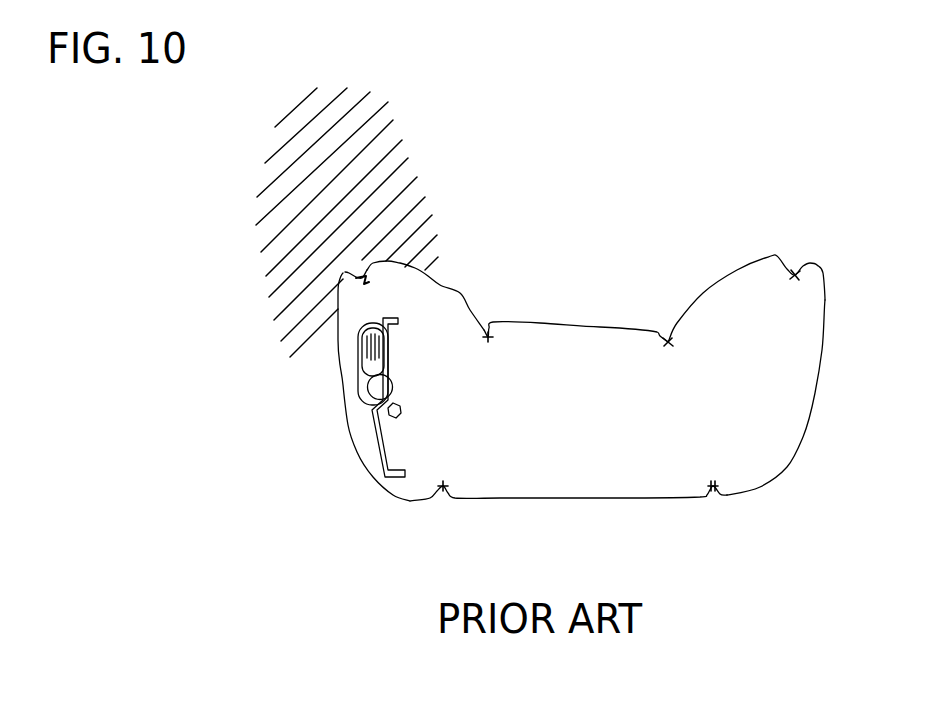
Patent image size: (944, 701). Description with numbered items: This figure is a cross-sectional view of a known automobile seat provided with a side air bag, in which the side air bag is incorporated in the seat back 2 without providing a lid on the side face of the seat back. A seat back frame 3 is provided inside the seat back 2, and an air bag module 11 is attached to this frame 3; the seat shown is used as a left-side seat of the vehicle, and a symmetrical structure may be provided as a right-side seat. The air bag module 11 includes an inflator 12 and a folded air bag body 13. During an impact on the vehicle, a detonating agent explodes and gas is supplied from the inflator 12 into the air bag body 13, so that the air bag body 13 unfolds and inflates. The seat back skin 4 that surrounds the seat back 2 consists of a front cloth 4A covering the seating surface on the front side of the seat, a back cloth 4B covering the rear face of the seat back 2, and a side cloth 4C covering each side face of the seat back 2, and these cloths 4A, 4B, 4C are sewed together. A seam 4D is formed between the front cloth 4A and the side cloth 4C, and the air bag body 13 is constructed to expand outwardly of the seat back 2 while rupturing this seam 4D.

The seat back 2 is at (623, 313).
The seat back frame 3 is at (373, 423).
The seat back skin 4 is at (553, 322).
The front cloth 4A is at (460, 293).
The back cloth 4B is at (541, 500).
The side cloth 4C is at (357, 451).
The seam 4D is at (345, 273).
The air bag module 11 is at (350, 304).
The inflator 12 is at (378, 388).
The air bag body 13 is at (352, 331).